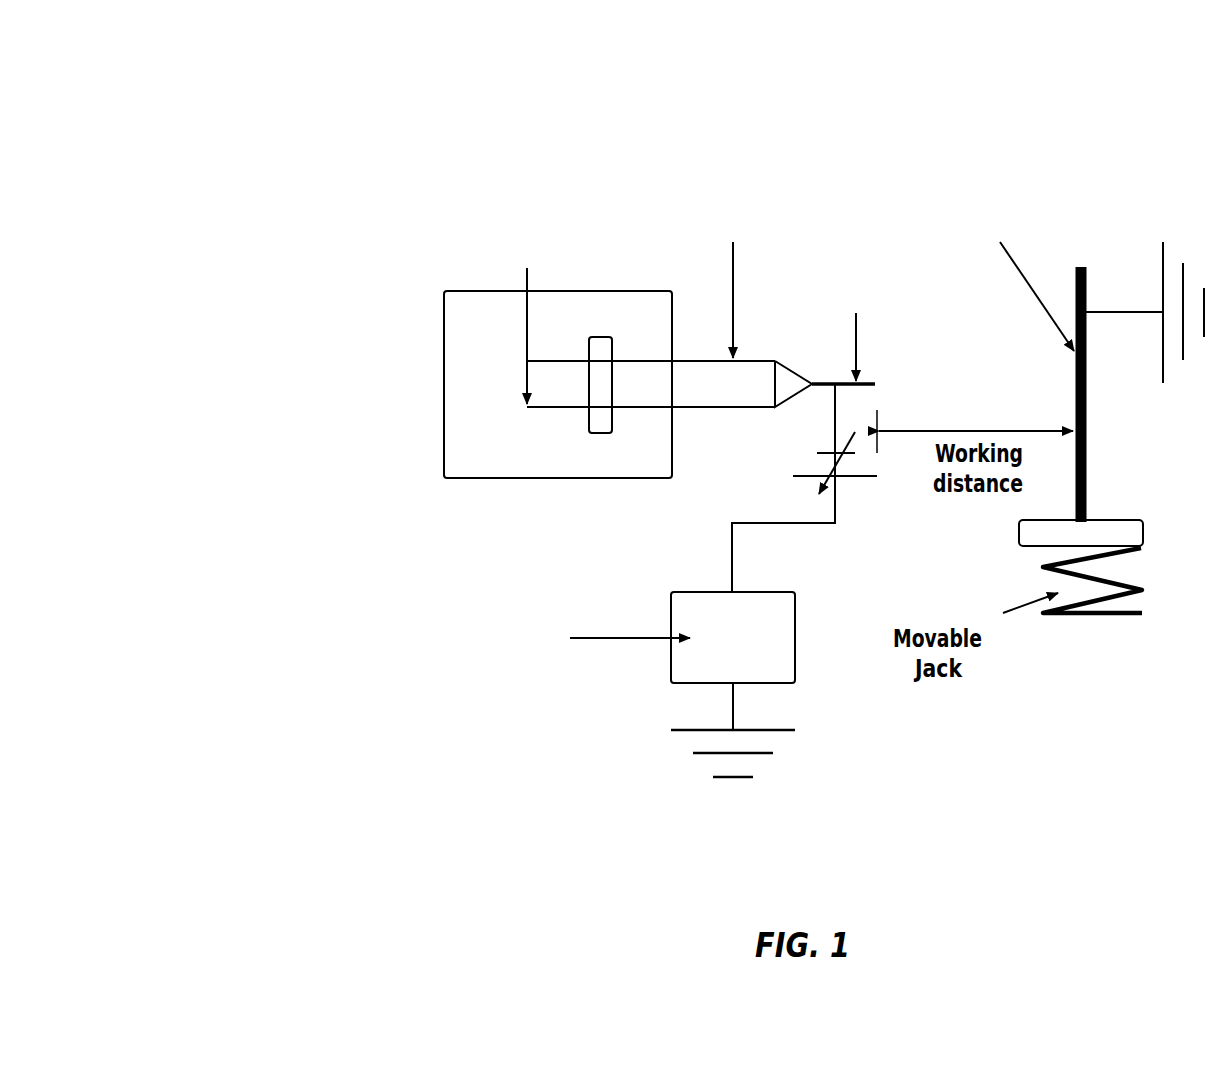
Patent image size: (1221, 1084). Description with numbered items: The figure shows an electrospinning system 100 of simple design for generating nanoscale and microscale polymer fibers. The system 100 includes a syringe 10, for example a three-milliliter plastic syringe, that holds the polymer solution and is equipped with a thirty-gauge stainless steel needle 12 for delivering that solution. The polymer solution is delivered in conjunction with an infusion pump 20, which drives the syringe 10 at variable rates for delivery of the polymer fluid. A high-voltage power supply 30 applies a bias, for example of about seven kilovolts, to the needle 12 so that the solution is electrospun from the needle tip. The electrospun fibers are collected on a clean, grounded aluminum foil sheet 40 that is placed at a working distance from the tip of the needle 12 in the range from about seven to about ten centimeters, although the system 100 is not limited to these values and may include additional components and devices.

The system 100 is at (278, 118).
The syringe 10 is at (678, 396).
The needle 12 is at (860, 367).
The infusion pump 20 is at (497, 462).
The high-voltage power supply 30 is at (748, 654).
The aluminum foil sheet 40 is at (1081, 268).